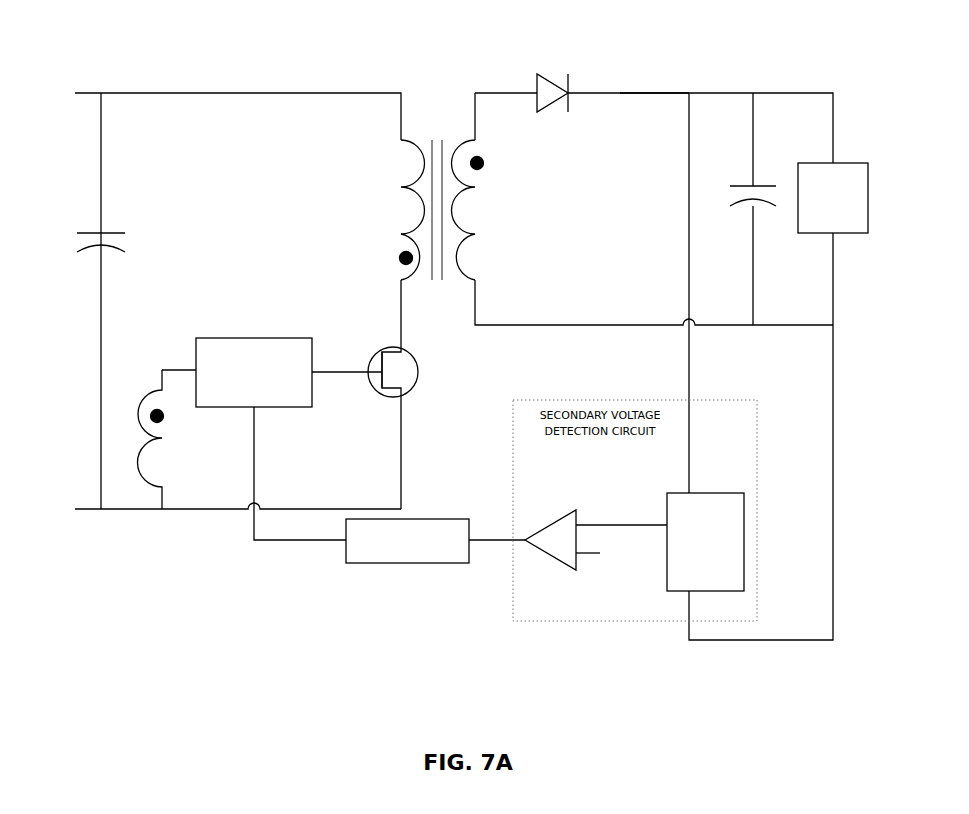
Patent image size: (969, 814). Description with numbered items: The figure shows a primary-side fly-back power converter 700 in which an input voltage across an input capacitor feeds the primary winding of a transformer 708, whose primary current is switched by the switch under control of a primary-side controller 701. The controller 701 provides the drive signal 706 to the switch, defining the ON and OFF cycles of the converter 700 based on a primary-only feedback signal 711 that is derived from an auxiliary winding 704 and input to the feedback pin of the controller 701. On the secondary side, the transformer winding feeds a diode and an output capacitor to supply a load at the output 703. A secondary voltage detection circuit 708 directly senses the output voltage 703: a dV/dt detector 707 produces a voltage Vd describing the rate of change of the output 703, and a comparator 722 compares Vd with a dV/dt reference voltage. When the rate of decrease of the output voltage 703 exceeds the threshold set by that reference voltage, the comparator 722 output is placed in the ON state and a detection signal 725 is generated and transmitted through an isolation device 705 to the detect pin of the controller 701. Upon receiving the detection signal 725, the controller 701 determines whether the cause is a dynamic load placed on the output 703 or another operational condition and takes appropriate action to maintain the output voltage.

The primary-side fly-back power converter 700 is at (298, 680).
The primary-side controller 701 is at (268, 323).
The output 703 is at (670, 88).
The auxiliary winding 704 is at (137, 382).
The isolation device 705 is at (437, 566).
The drive signal 706 is at (327, 365).
The dV/dt detector 707 is at (665, 500).
The transformer 708 is at (432, 128).
The primary-only feedback signal 711 is at (170, 368).
The comparator 722 is at (538, 525).
The detection signal 725 is at (300, 547).